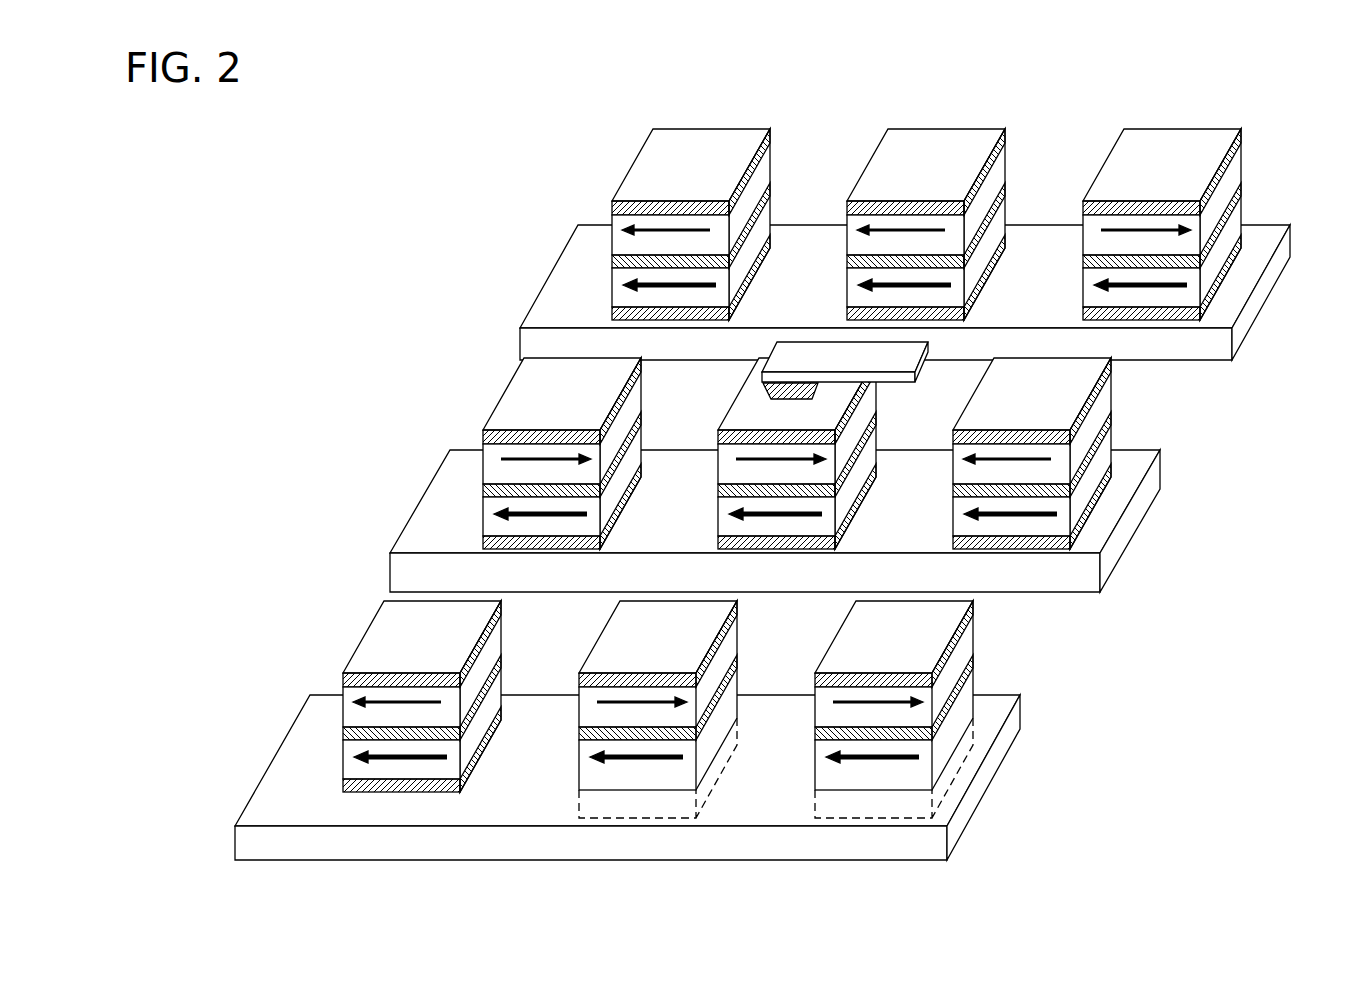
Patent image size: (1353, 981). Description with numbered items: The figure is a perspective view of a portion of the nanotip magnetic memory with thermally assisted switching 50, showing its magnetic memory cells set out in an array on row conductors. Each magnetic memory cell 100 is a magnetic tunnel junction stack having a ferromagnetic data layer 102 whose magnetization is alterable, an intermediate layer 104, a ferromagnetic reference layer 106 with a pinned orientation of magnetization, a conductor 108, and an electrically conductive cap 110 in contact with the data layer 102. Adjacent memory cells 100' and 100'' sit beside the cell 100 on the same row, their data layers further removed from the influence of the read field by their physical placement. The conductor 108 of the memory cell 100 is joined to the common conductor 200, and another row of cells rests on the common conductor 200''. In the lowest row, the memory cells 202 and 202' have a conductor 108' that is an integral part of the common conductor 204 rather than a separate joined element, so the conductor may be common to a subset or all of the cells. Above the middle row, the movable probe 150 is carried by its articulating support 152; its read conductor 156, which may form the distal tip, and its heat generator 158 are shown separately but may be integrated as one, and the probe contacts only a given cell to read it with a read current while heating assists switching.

The nanotip magnetic memory with thermally assisted switching 50 is at (478, 163).
The magnetic memory cell 100 is at (807, 453).
The adjacent memory cell 100' is at (1096, 453).
The adjacent memory cell 100'' is at (525, 440).
The ferromagnetic data layer 102 is at (841, 401).
The intermediate layer 104 is at (763, 454).
The ferromagnetic reference layer 106 is at (743, 516).
The conductor 108 is at (826, 506).
The conductor 108' is at (770, 814).
The electrically conductive cap 110 is at (770, 401).
The movable probe 150 is at (881, 278).
The articulating support 152 is at (821, 352).
The read conductor 156 is at (764, 390).
The heat generator 158 is at (810, 387).
The common conductor 200 is at (792, 538).
The common conductor 200'' is at (936, 300).
The memory cell 202 is at (873, 709).
The memory cell 202' is at (641, 709).
The common conductor 204 is at (978, 797).